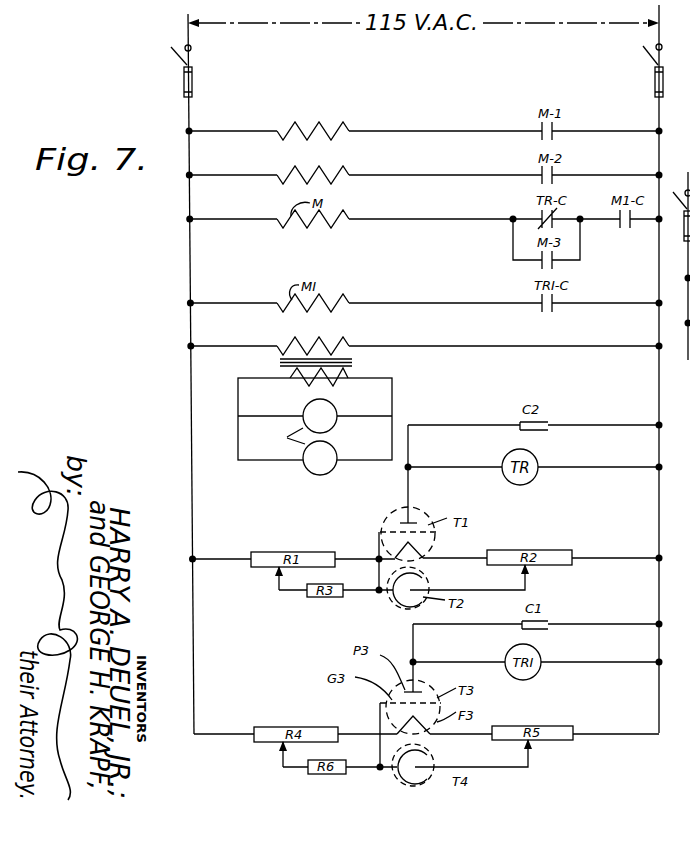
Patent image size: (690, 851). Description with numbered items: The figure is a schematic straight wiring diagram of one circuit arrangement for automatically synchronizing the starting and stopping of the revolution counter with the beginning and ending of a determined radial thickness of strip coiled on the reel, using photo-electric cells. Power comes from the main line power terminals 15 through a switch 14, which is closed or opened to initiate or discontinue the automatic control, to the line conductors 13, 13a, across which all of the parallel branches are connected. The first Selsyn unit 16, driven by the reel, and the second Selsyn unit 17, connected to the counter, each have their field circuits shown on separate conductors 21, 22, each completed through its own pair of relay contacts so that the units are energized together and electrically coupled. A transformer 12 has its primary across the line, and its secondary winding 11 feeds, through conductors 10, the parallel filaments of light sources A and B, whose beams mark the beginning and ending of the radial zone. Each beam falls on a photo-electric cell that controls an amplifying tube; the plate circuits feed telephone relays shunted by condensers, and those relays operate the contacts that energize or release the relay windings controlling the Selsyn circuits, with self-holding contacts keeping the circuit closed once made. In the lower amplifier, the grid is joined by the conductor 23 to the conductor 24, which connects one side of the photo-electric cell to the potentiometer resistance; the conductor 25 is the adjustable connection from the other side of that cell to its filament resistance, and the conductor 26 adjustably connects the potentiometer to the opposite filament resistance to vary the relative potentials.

The conductors 10 is at (347, 384).
The transformer secondary winding 11 is at (337, 382).
The transformer 12 is at (292, 345).
The line conductor 13 is at (187, 115).
The line conductor 13a is at (658, 117).
The switch 14 is at (182, 67).
The main line power terminals 15 is at (190, 40).
The Selsyn unit 16 is at (290, 128).
The Selsyn unit 17 is at (290, 172).
The conductor 21 is at (387, 130).
The conductor 22 is at (387, 174).
The conductor 23 is at (380, 718).
The conductor 24 is at (376, 768).
The conductor 25 is at (508, 768).
The conductor 26 is at (283, 755).